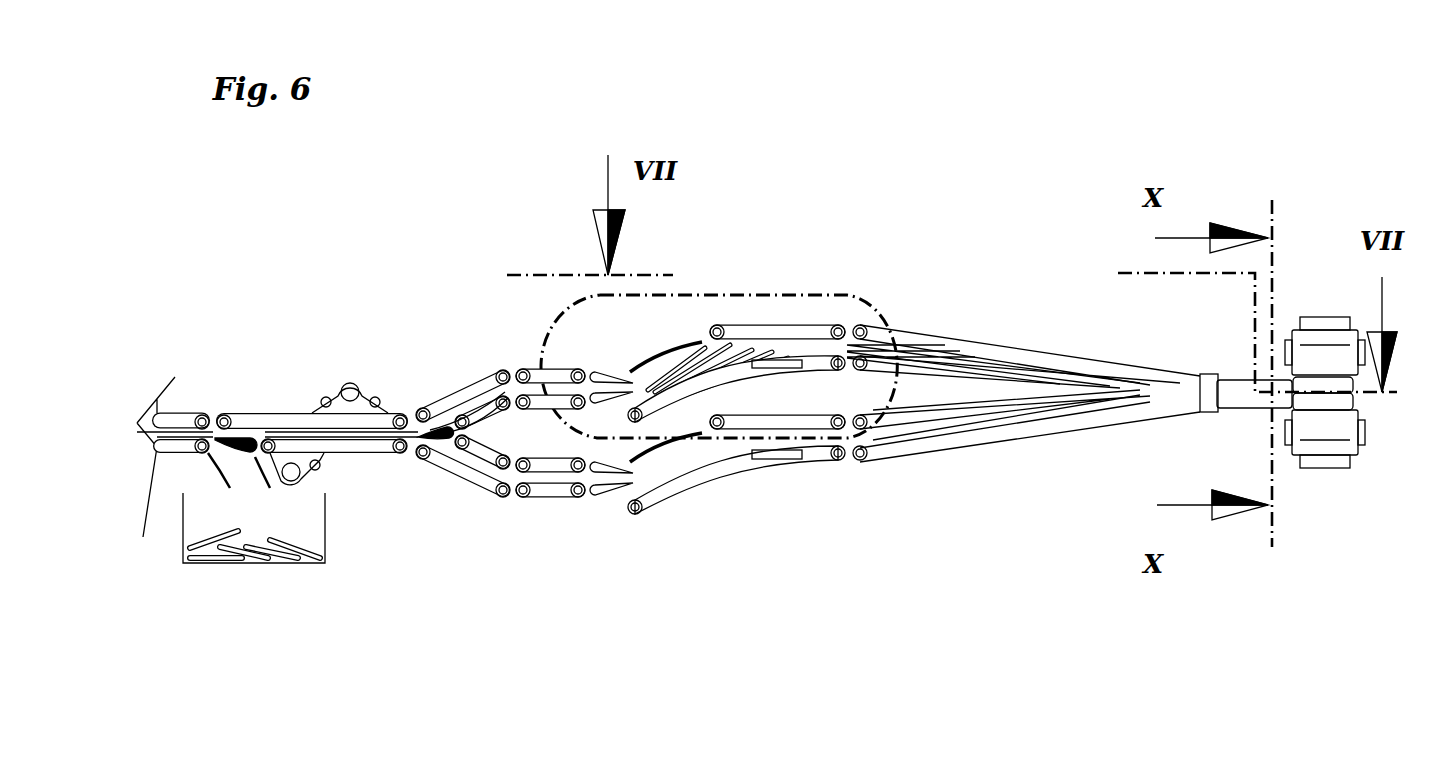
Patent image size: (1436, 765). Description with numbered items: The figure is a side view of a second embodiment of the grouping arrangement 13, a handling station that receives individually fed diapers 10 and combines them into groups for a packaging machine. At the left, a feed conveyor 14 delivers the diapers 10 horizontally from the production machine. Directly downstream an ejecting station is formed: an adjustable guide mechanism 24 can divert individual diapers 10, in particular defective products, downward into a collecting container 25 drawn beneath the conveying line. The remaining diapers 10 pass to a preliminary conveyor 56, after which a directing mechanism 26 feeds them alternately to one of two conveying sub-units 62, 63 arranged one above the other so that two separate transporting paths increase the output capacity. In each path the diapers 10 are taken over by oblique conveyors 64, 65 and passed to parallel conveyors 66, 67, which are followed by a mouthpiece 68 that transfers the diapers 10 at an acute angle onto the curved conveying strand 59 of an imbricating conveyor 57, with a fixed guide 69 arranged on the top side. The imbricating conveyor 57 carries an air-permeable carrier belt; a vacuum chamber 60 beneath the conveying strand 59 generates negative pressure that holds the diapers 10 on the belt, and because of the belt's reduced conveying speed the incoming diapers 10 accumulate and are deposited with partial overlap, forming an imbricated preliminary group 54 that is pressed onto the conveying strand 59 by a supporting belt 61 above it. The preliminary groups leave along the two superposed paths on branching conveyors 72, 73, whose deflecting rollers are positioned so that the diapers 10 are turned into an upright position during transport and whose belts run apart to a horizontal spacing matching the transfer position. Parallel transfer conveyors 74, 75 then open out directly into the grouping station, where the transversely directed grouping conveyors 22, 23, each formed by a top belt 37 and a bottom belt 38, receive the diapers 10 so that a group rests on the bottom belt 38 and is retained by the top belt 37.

The diapers 10 is at (293, 437).
The grouping arrangement 13 is at (1297, 230).
The feed conveyor 14 is at (185, 397).
The grouping conveyor 22 is at (1320, 273).
The grouping conveyor 23 is at (1323, 393).
The guide mechanism 24 is at (247, 437).
The collecting container 25 is at (183, 520).
The directing mechanism 26 is at (443, 437).
The top belt 37 is at (1343, 302).
The bottom belt 38 is at (1323, 480).
The preliminary group 54 is at (733, 335).
The preliminary conveyor 56 is at (307, 380).
The imbricating conveyor 57 is at (688, 342).
The conveying strand 59 is at (730, 460).
The vacuum chamber 60 is at (692, 482).
The supporting belt 61 is at (812, 410).
The conveying sub-unit 62 is at (498, 350).
The conveying sub-unit 63 is at (535, 518).
The oblique conveyor 64 is at (455, 380).
The oblique conveyor 65 is at (467, 502).
The parallel conveyor 66 is at (563, 360).
The parallel conveyor 67 is at (563, 520).
The mouthpiece 68 is at (613, 360).
The fixed guide 69 is at (627, 342).
The branching conveyor 72 is at (1020, 327).
The branching conveyor 73 is at (1003, 450).
The transfer conveyor 74 is at (1247, 410).
The transfer conveyor 75 is at (1209, 393).